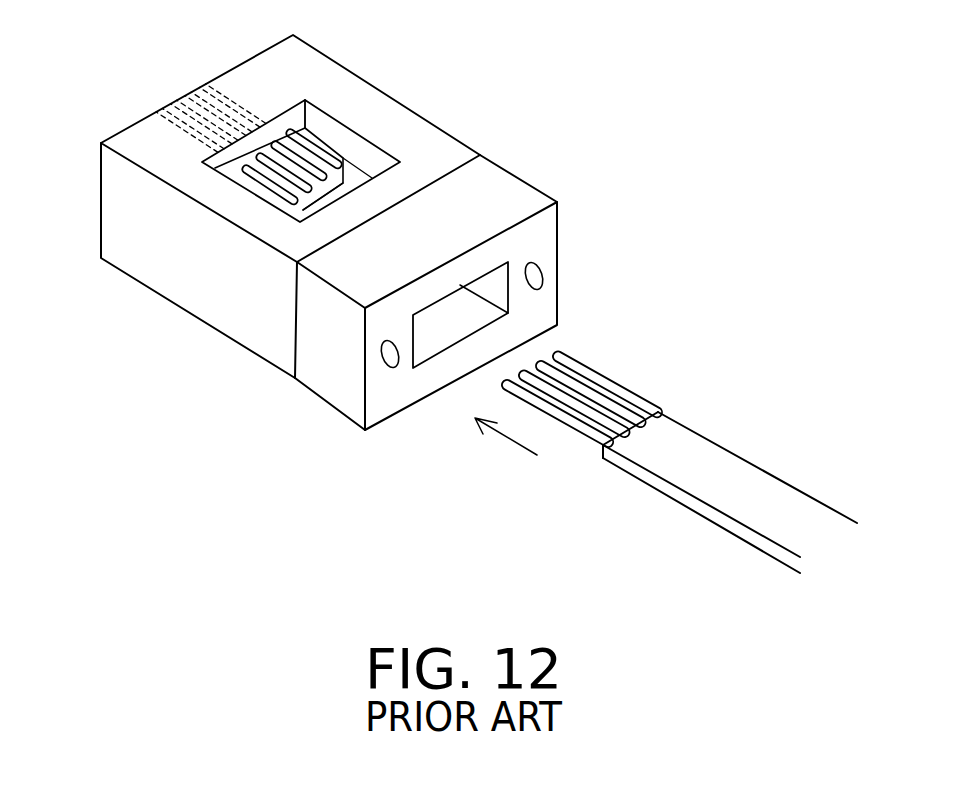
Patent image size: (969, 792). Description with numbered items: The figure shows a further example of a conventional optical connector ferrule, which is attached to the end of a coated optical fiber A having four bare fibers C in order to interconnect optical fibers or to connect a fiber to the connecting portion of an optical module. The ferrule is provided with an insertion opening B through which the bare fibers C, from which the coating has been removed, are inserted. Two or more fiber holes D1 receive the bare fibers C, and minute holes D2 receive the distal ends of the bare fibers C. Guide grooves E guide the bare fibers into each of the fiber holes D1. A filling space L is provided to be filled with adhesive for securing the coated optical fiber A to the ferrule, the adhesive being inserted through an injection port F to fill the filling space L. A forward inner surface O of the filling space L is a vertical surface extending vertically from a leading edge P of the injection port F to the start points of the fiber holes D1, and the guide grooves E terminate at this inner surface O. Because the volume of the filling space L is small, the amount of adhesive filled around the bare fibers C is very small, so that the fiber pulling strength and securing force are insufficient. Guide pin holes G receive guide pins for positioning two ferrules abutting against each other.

The coated optical fiber A is at (732, 463).
The insertion opening B is at (480, 322).
The bare fibers C is at (617, 388).
The fiber holes D1 is at (185, 146).
The minute holes D2 is at (178, 142).
The guide grooves E is at (345, 173).
The injection port F is at (347, 127).
The guide pin holes G is at (543, 275).
The filling space L is at (358, 182).
The forward inner surface O is at (310, 125).
The leading edge P is at (293, 100).